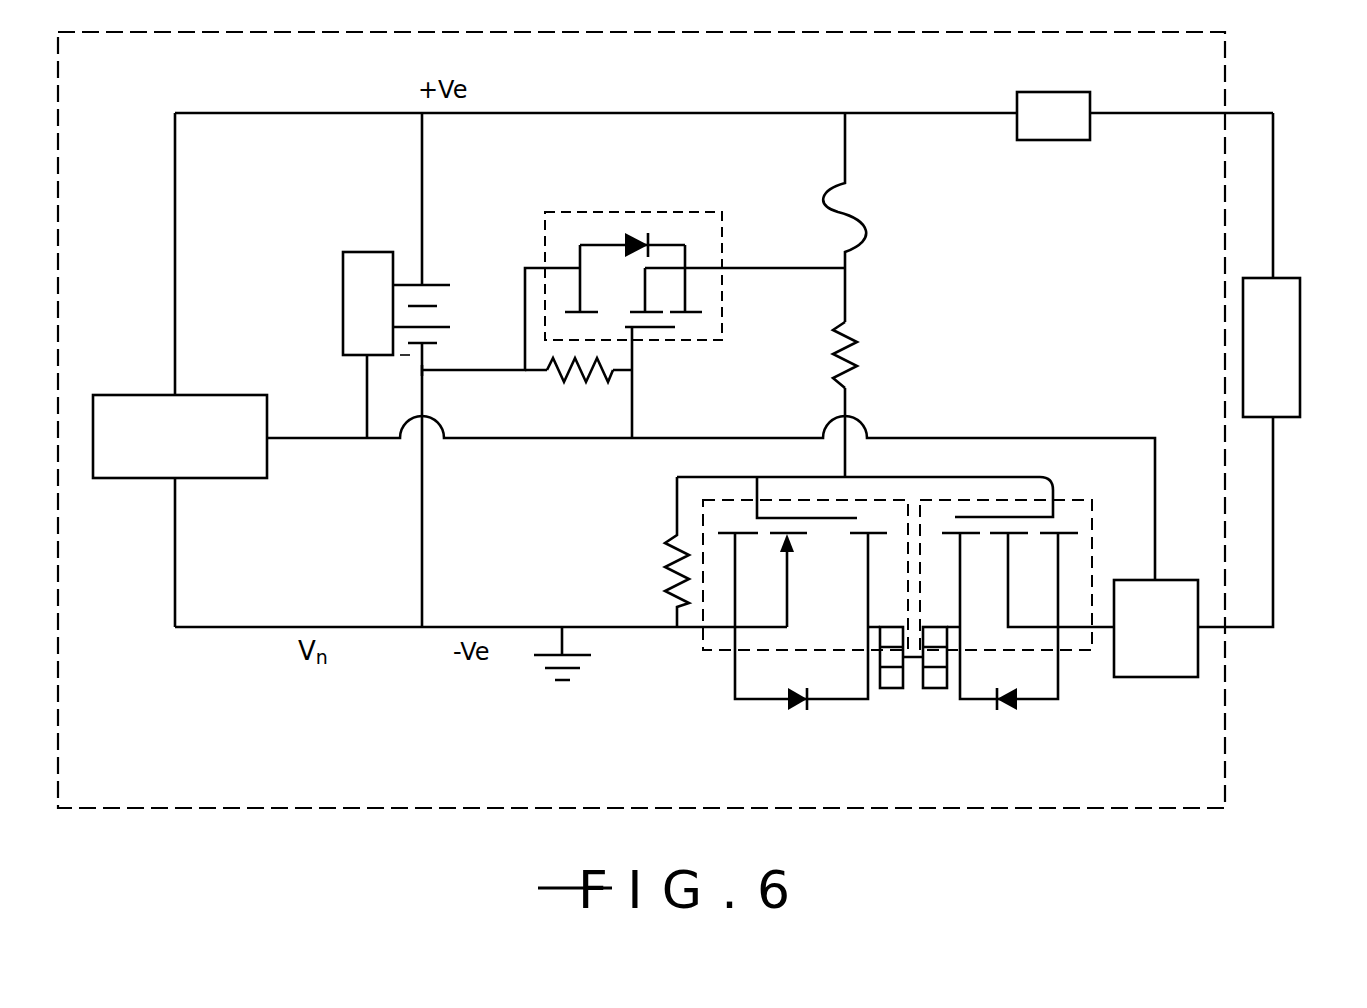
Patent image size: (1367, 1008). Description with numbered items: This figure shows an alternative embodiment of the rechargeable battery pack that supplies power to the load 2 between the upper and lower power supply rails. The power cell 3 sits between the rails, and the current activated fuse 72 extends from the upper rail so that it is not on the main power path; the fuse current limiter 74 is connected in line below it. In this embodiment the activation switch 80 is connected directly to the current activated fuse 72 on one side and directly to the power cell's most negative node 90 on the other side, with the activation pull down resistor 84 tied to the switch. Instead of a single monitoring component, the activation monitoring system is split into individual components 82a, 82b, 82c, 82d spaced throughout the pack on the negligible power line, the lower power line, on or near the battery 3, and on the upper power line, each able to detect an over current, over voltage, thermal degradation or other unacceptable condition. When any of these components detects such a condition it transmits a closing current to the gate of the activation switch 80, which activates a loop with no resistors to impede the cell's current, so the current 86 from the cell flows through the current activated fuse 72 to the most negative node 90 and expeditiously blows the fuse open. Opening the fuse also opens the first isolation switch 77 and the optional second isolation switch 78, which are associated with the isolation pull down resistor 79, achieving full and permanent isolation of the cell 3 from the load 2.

The load 2 is at (1300, 311).
The power cell 3 is at (446, 307).
The current activated fuse 72 is at (848, 201).
The fuse current limiter 74 is at (858, 357).
The first isolation switch 77 is at (805, 500).
The second isolation switch 78 is at (1030, 500).
The isolation pull down resistor 79 is at (668, 582).
The activation switch 80 is at (624, 212).
The activation monitoring system component 82a is at (368, 303).
The activation monitoring system component 82b is at (180, 436).
The activation monitoring system component 82c is at (1156, 628).
The activation monitoring system component 82d is at (1072, 130).
The activation pull down resistor 84 is at (571, 378).
The current 86 is at (482, 121).
The most negative node 90 is at (424, 374).